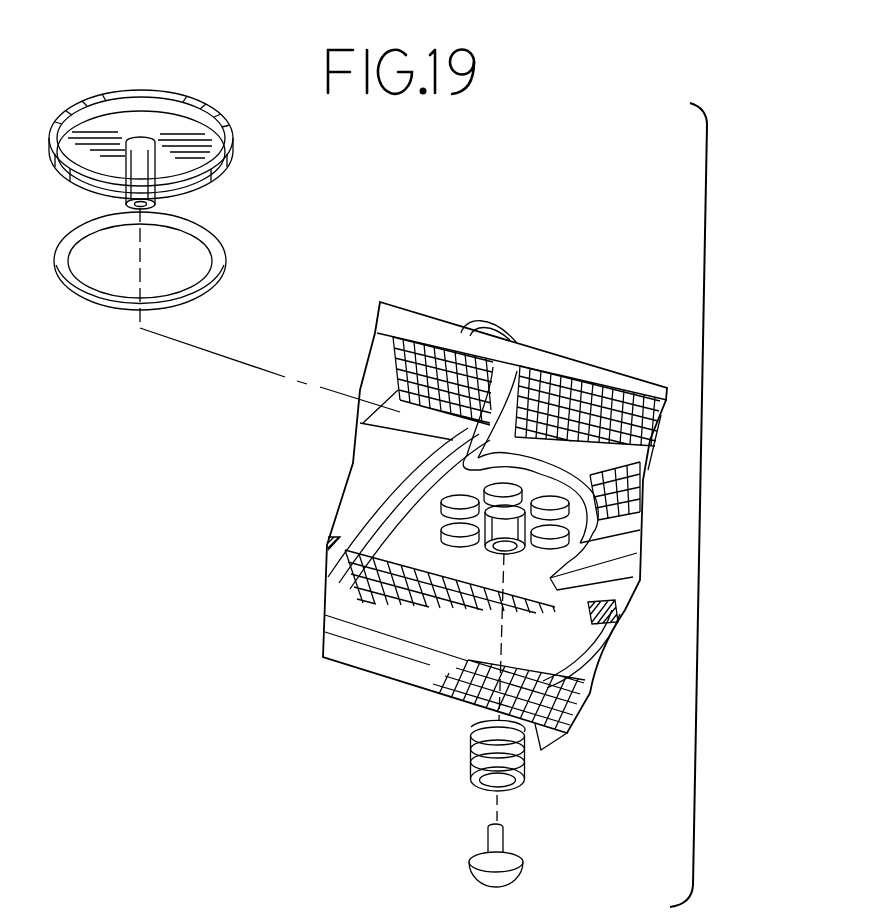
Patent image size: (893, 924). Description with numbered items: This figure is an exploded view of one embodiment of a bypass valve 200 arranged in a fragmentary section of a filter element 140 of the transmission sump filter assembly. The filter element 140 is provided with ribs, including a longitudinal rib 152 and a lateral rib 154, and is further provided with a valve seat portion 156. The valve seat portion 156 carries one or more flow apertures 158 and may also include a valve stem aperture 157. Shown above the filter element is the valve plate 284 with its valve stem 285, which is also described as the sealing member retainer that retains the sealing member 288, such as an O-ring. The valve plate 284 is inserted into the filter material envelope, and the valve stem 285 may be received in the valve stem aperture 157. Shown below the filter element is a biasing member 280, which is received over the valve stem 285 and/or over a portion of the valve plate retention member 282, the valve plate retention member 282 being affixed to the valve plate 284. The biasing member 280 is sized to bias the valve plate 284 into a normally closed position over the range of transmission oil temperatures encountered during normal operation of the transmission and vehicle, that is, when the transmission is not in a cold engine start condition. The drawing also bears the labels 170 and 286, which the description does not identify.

The filter element 140 is at (408, 292).
The longitudinal rib 152 is at (620, 618).
The lateral rib 154 is at (498, 408).
The valve seat portion 156 is at (478, 483).
The valve stem aperture 157 is at (482, 549).
The flow apertures 158 is at (441, 503).
The textured gripping surface 170 is at (612, 413).
The bypass valve 200 is at (727, 505).
The biasing member 280 is at (468, 748).
The valve plate retention member 282 is at (468, 870).
The valve plate 284 is at (218, 106).
The valve stem 285 is at (157, 200).
The post 286 is at (218, 152).
The sealing member 288 is at (223, 274).